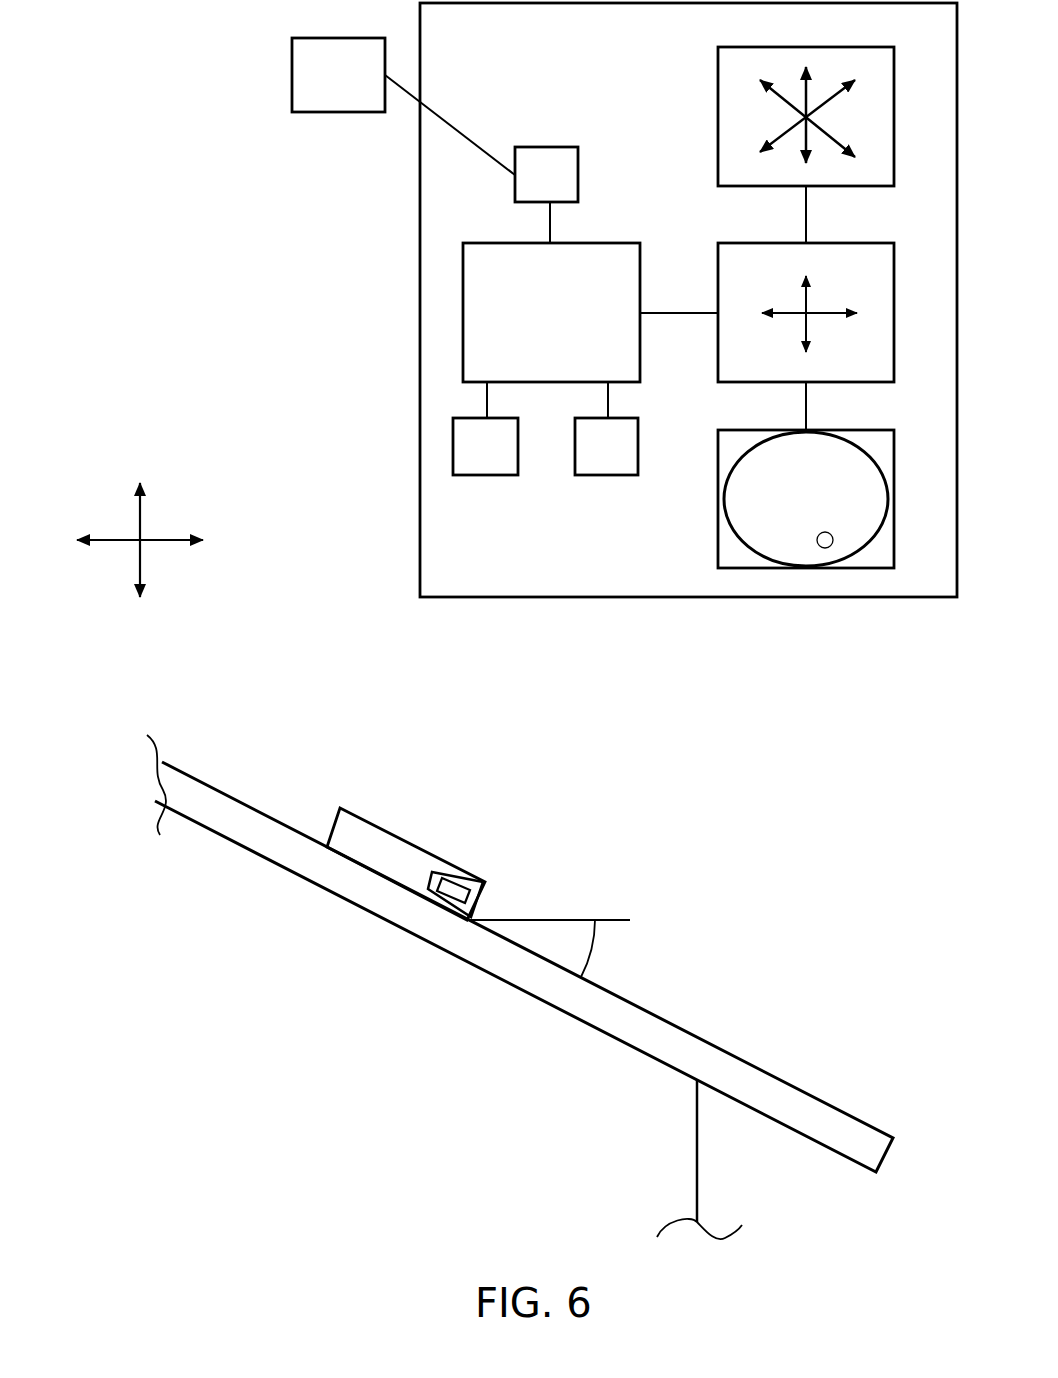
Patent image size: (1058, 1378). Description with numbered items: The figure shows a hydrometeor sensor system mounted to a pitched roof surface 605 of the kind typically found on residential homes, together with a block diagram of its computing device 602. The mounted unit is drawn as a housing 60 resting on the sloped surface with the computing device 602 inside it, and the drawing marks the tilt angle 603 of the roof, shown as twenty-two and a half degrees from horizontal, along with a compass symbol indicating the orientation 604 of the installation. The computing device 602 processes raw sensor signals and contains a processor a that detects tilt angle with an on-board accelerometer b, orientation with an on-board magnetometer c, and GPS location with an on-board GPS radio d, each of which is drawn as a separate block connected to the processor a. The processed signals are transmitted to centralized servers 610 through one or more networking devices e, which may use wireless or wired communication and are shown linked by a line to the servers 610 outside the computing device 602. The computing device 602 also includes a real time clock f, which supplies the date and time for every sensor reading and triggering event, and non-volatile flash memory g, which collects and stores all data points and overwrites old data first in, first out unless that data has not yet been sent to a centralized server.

The device 60 is at (353, 828).
The computing device 602 is at (497, 570).
The tilt angle 603 is at (667, 958).
The orientation 604 is at (209, 496).
The pitched roof surface 605 is at (753, 1088).
The centralized servers 610 is at (318, 90).
The processor a is at (565, 373).
The accelerometer b is at (853, 118).
The magnetometer c is at (865, 277).
The GPS radio d is at (730, 558).
The networking devices e is at (567, 182).
The real time clock f is at (608, 463).
The non-volatile flash memory g is at (487, 463).